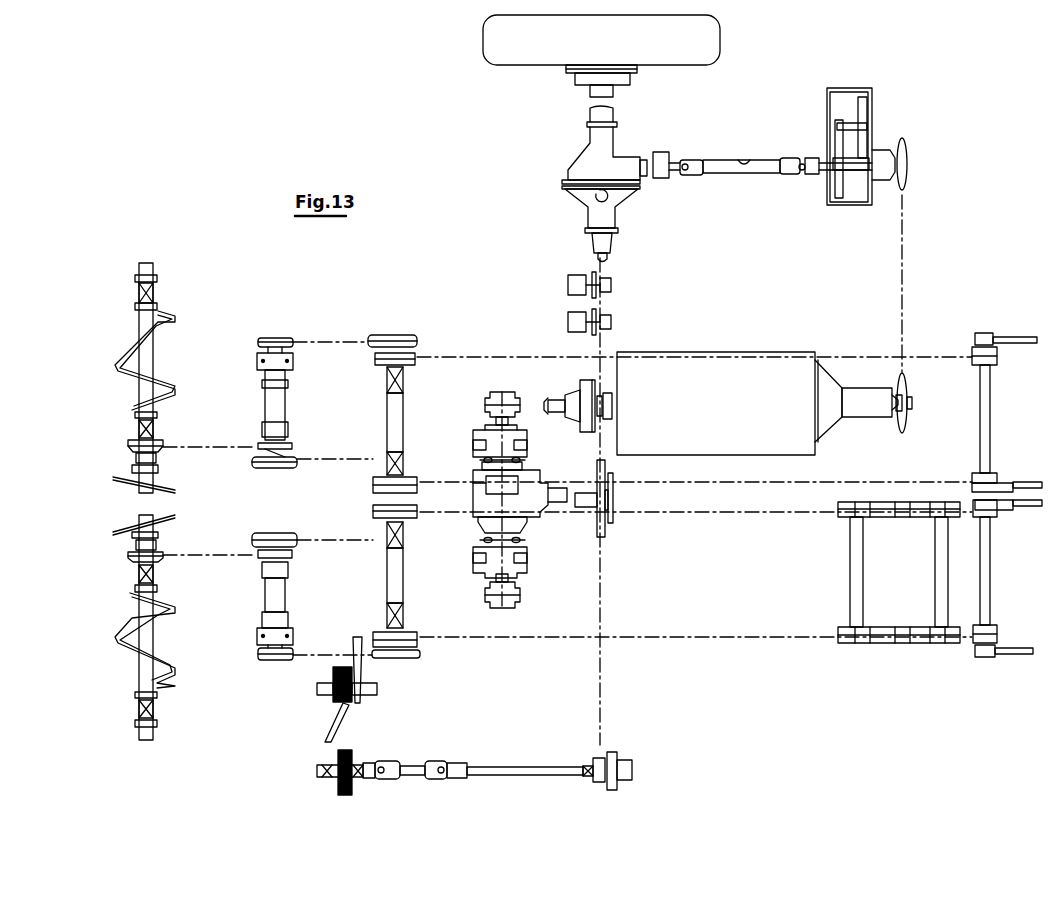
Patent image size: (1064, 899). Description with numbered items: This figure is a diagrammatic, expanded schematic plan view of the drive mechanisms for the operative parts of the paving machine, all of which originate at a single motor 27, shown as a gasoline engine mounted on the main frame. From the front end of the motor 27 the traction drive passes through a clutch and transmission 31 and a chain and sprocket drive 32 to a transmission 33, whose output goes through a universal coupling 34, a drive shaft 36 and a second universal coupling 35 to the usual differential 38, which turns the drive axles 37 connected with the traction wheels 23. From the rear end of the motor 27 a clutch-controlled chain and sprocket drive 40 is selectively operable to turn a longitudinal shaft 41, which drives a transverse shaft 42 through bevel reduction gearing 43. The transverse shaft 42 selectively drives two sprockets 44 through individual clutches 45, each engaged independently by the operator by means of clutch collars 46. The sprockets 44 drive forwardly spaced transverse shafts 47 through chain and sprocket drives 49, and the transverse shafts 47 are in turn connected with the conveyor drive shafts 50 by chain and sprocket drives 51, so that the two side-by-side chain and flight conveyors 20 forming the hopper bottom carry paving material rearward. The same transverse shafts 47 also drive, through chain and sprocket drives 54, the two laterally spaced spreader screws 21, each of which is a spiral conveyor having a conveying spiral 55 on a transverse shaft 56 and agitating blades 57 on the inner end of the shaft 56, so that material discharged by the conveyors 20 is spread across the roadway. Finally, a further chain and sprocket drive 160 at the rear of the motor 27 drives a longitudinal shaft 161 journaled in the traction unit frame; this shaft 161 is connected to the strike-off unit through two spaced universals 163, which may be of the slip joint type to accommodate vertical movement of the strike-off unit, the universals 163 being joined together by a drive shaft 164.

The conveyors 20 is at (927, 355).
The spreader screws 21 is at (162, 501).
The traction wheels 23 is at (705, 42).
The motor 27 is at (718, 366).
The clutch and transmission 31 is at (826, 432).
The chain and sprocket drive 32 is at (909, 432).
The transmission 33 is at (847, 207).
The universal coupling 34 is at (800, 157).
The universal coupling 35 is at (685, 157).
The drive shaft 36 is at (735, 158).
The drive axles 37 is at (608, 257).
The differential 38 is at (605, 160).
The chain and sprocket drive 40 is at (593, 432).
The longitudinal shaft 41 is at (587, 504).
The transverse shaft 42 is at (517, 528).
The bevel reduction gearing 43 is at (513, 488).
The sprockets 44 is at (487, 461).
The clutches 45 is at (478, 431).
The clutch collars 46 is at (517, 398).
The transverse shafts 47 is at (287, 411).
The chain and sprocket drives 49 is at (315, 458).
The conveyor drive shafts 50 is at (393, 431).
The chain and sprocket drives 51 is at (348, 340).
The chain and sprocket drives 54 is at (200, 447).
The conveying spirals 55 is at (132, 366).
The transverse shafts 56 is at (139, 330).
The agitating blades 57 is at (177, 491).
The chain and sprocket drive 160 is at (606, 757).
The longitudinal shaft 161 is at (520, 765).
The universals 163 is at (379, 762).
The drive shaft 164 is at (421, 764).